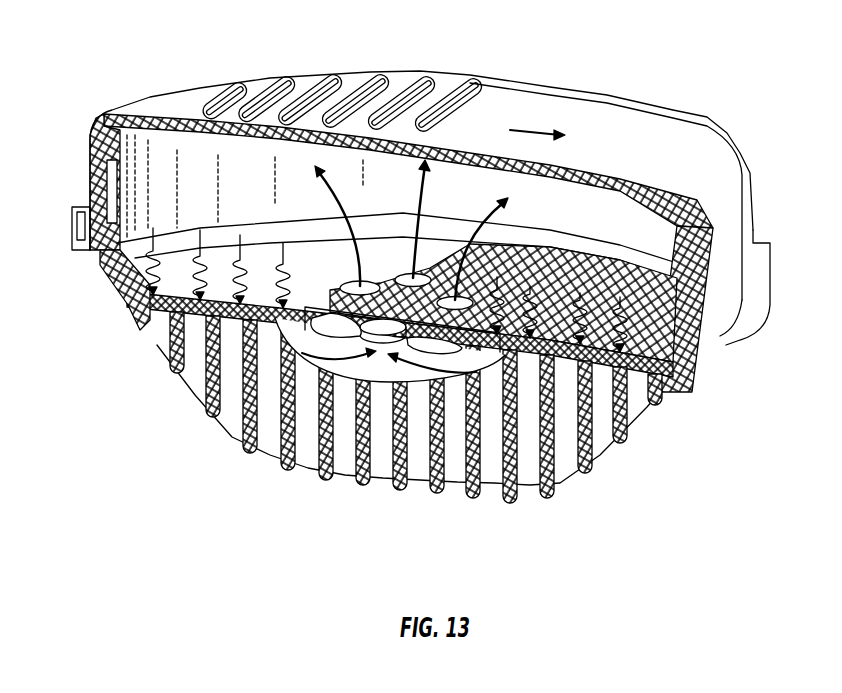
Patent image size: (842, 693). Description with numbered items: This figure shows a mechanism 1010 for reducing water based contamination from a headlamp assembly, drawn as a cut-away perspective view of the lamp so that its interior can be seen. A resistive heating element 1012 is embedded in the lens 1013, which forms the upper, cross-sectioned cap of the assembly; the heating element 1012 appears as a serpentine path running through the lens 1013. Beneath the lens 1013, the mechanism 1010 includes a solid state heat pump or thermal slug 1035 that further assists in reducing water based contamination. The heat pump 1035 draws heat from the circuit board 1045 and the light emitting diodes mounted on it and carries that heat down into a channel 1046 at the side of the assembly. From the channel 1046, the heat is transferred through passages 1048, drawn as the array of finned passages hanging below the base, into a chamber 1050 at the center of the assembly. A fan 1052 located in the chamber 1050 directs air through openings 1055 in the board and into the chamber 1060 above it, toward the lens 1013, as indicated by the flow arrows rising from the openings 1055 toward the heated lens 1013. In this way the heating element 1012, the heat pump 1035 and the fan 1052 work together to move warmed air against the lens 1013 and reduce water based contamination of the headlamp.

The mechanism 1010 is at (117, 90).
The resistive heating element 1012 is at (377, 72).
The lens 1013 is at (620, 120).
The openings 1055 is at (428, 276).
The chamber 1060 is at (157, 193).
The channel 1046 is at (118, 293).
The circuit board 1045 is at (657, 343).
The solid state heat pump or thermal slug 1035 is at (665, 348).
The passages 1048 is at (283, 342).
The chamber 1050 is at (347, 342).
The fan 1052 is at (433, 343).